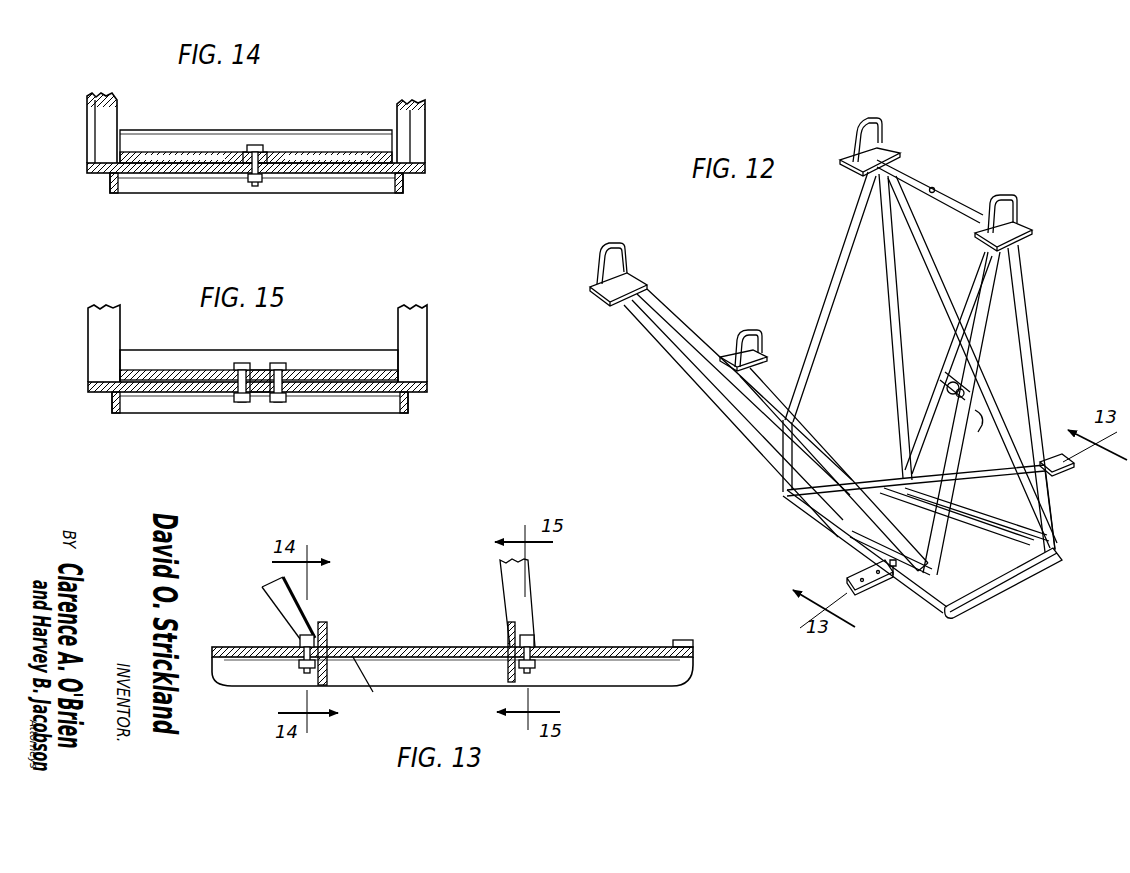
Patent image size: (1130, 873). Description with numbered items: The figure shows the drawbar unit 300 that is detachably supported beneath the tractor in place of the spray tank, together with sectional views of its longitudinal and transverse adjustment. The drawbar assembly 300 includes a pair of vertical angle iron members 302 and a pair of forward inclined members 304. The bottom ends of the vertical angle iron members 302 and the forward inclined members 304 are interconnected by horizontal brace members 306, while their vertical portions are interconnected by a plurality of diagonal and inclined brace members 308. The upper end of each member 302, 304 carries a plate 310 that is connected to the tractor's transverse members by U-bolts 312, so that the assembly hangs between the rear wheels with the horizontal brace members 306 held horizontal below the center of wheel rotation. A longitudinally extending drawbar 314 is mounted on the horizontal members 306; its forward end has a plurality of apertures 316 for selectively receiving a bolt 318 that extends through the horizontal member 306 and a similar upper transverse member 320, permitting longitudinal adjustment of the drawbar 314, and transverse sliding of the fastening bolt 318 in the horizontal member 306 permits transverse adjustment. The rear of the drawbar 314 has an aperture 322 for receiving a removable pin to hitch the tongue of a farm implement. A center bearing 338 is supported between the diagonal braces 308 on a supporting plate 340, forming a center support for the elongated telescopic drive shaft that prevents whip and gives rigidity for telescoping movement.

In FIG. 12, the drawbar unit 300 is at (780, 507).
In FIG. 15, the vertical angle iron members 302 is at (88, 366).
In FIG. 13, the vertical angle iron members 302 is at (527, 610).
In FIG. 12, the vertical angle iron members 302 is at (1027, 343).
In FIG. 14, the forward inclined members 304 is at (85, 128).
In FIG. 13, the forward inclined members 304 is at (277, 580).
In FIG. 12, the forward inclined members 304 is at (830, 453).
In FIG. 14, the horizontal brace members 306 is at (350, 178).
In FIG. 15, the horizontal brace members 306 is at (327, 357).
In FIG. 13, the horizontal brace members 306 is at (507, 640).
In FIG. 12, the horizontal brace members 306 is at (1013, 577).
In FIG. 12, the diagonal and inclined brace members 308 is at (972, 293).
In FIG. 12, the plate 310 is at (1020, 228).
In FIG. 12, the U-bolts 312 is at (1017, 196).
In FIG. 14, the drawbar 314 is at (240, 172).
In FIG. 15, the drawbar 314 is at (260, 395).
In FIG. 13, the drawbar 314 is at (603, 646).
In FIG. 12, the drawbar 314 is at (970, 520).
In FIG. 13, the apertures 316 is at (379, 684).
In FIG. 12, the apertures 316 is at (872, 572).
In FIG. 14, the bolt 318 is at (256, 186).
In FIG. 13, the bolt 318 is at (300, 637).
In FIG. 12, the bolt 318 is at (895, 566).
In FIG. 14, the upper transverse member 320 is at (282, 150).
In FIG. 13, the upper transverse member 320 is at (327, 622).
In FIG. 13, the aperture 322 is at (693, 643).
In FIG. 12, the center bearing 338 is at (950, 383).
In FIG. 12, the supporting plate 340 is at (980, 422).